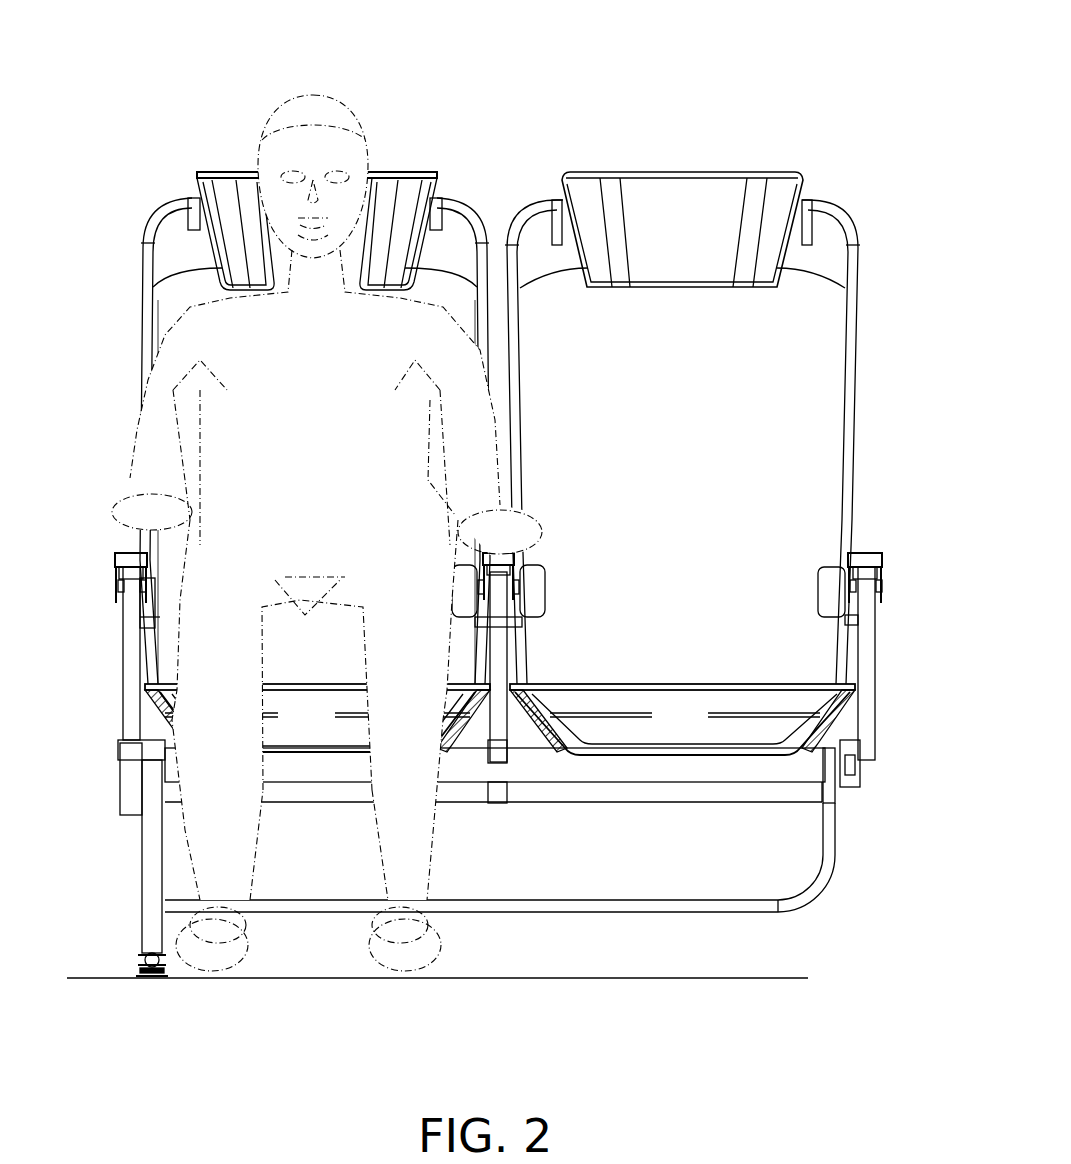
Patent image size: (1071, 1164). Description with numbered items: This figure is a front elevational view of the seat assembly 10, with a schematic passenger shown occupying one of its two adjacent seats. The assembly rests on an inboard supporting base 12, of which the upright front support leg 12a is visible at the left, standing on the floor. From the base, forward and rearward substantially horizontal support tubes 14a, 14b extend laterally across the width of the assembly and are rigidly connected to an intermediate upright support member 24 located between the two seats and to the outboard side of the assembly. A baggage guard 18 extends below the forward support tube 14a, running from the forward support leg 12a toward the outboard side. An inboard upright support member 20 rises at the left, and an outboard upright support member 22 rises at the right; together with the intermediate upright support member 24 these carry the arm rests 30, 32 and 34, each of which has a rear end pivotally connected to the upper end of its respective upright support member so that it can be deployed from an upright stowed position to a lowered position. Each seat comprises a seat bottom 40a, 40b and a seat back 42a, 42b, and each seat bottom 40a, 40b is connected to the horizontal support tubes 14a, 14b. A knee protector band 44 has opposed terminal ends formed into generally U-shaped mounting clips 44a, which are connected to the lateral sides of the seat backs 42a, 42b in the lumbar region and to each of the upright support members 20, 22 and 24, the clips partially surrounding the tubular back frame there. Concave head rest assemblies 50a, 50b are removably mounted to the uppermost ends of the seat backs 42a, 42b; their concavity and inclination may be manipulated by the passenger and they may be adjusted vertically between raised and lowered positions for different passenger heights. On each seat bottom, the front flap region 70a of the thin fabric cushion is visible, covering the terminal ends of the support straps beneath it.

The seat assembly 10 is at (818, 80).
The inboard supporting base 12 is at (120, 843).
The upright front support leg 12a is at (152, 872).
The forward horizontal support tube 14a is at (560, 765).
The rearward horizontal support tube 14b is at (468, 790).
The baggage guard 18 is at (595, 912).
The inboard upright support member 20 is at (130, 662).
The outboard upright support member 22 is at (872, 655).
The intermediate upright support member 24 is at (500, 655).
The arm rest 30 is at (135, 556).
The arm rest 32 is at (885, 564).
The arm rest 34 is at (505, 552).
The seat bottom 40a is at (308, 670).
The seat bottom 40b is at (640, 660).
The seat back 42a is at (185, 286).
The seat back 42b is at (700, 444).
The knee protector band 44 is at (546, 588).
The U-shaped mounting clips 44a is at (160, 592).
The concave head rest assembly 50a is at (225, 208).
The concave head rest assembly 50b is at (702, 229).
The front flap region 70a is at (327, 729).